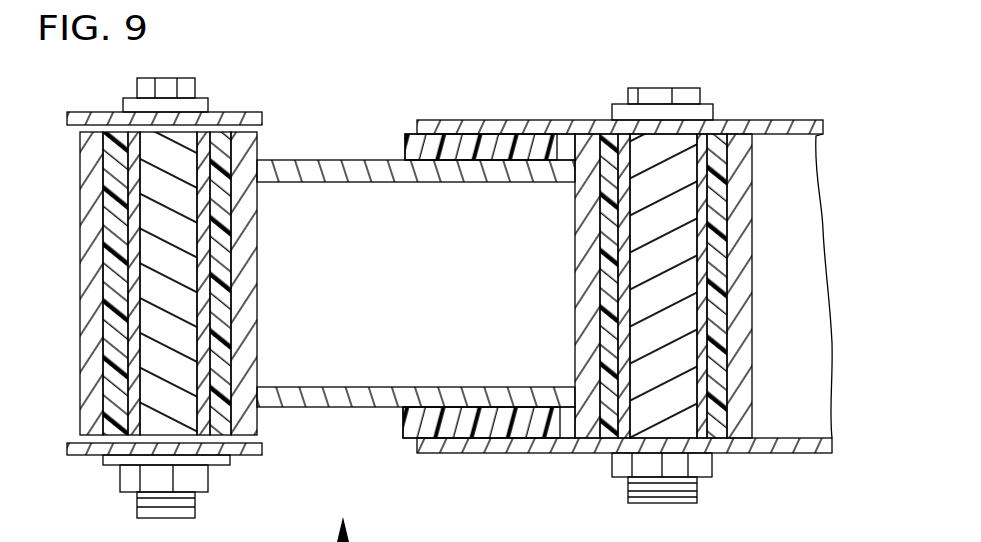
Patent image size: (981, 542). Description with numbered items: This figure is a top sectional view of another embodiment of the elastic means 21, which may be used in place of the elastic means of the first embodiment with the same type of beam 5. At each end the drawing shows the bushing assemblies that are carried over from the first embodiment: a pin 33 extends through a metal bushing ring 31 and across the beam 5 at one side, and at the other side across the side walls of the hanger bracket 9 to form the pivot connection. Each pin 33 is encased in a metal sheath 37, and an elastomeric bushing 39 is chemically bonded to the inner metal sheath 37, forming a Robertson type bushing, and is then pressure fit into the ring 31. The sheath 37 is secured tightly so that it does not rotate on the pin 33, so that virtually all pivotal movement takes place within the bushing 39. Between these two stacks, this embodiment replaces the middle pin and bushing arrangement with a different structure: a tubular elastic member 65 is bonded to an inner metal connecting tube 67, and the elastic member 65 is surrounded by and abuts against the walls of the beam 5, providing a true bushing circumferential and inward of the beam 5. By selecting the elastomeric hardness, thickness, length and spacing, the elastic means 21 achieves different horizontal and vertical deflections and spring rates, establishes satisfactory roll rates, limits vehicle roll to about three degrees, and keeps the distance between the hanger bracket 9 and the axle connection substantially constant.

The hanger bracket 9 is at (237, 121).
The metal bushing ring 31 is at (243, 165).
The elastomeric bushing 39 is at (225, 252).
The metal sheath 37 is at (133, 342).
The pin 33 is at (180, 340).
The elastic means 21 is at (567, 99).
The inner metal connecting tube 67 is at (397, 313).
The tubular elastic member 65 is at (417, 418).
The beam 5 is at (752, 128).